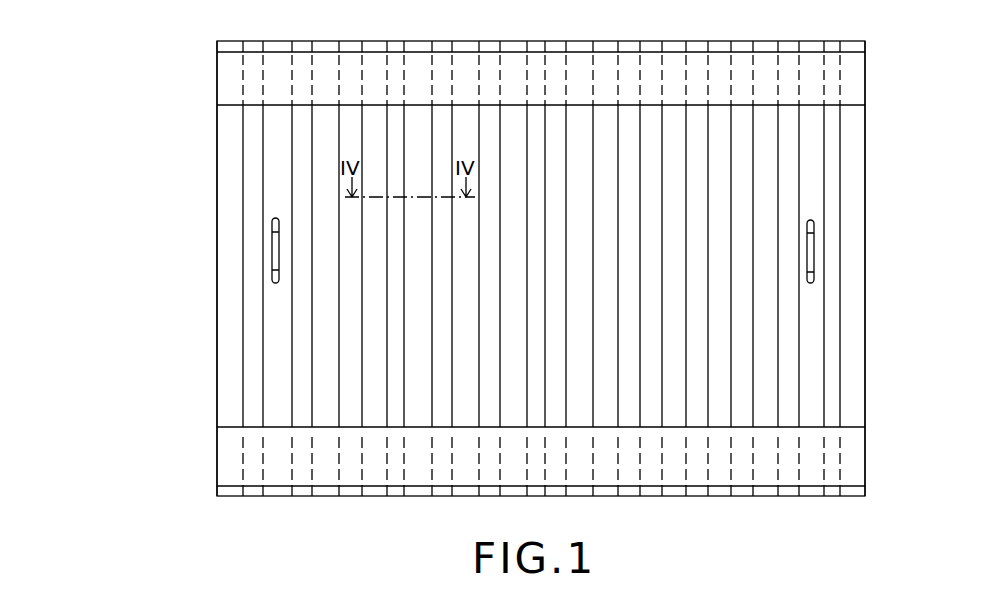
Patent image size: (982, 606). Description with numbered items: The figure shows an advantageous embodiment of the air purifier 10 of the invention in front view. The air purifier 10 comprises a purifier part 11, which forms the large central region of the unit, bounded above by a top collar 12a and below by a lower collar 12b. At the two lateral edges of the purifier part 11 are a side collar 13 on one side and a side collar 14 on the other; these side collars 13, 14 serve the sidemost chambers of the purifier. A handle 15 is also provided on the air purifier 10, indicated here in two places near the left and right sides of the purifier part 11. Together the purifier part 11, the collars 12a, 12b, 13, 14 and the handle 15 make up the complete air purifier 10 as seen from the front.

The air purifier 10 is at (887, 175).
The purifier part 11 is at (780, 337).
The top collar 12a is at (812, 48).
The lower collar 12b is at (763, 492).
The side collar 13 is at (222, 256).
The side collar 14 is at (857, 265).
The handle 15 is at (272, 258).